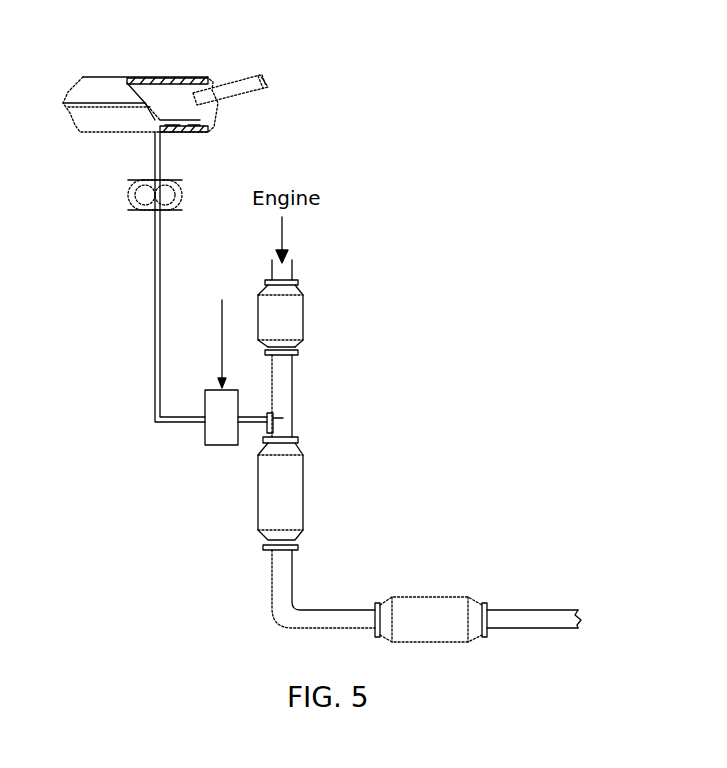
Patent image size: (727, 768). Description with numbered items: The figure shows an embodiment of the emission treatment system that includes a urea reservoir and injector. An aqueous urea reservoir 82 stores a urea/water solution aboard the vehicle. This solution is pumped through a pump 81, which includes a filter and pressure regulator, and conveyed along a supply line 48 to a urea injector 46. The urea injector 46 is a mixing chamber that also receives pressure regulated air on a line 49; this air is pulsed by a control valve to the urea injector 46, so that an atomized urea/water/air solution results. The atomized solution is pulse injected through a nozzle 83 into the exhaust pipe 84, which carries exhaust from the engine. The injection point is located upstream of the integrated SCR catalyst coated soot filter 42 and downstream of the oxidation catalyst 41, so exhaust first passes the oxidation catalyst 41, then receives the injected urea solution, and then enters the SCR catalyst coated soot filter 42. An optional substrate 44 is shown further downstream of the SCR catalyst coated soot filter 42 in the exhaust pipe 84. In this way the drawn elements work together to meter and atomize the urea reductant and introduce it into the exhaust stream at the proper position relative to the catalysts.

The aqueous urea reservoir 82 is at (153, 77).
The pump 81 is at (180, 180).
The supply line 48 is at (155, 388).
The line 49 is at (220, 313).
The urea injector 46 is at (205, 435).
The nozzle 83 is at (265, 415).
The exhaust pipe 84 is at (295, 397).
The oxidation catalyst 41 is at (304, 303).
The integrated SCR catalyst coated soot filter 42 is at (305, 472).
The optional substrate 44 is at (435, 597).